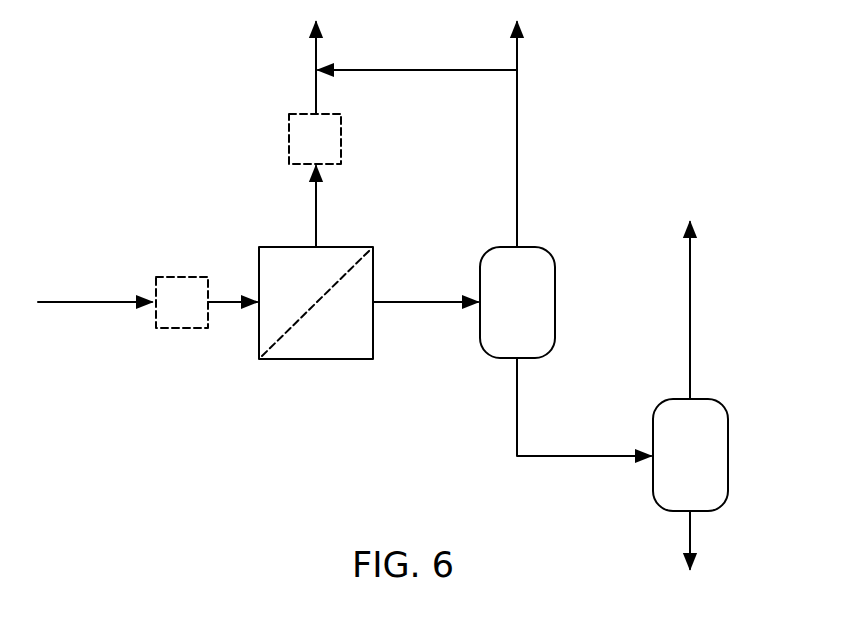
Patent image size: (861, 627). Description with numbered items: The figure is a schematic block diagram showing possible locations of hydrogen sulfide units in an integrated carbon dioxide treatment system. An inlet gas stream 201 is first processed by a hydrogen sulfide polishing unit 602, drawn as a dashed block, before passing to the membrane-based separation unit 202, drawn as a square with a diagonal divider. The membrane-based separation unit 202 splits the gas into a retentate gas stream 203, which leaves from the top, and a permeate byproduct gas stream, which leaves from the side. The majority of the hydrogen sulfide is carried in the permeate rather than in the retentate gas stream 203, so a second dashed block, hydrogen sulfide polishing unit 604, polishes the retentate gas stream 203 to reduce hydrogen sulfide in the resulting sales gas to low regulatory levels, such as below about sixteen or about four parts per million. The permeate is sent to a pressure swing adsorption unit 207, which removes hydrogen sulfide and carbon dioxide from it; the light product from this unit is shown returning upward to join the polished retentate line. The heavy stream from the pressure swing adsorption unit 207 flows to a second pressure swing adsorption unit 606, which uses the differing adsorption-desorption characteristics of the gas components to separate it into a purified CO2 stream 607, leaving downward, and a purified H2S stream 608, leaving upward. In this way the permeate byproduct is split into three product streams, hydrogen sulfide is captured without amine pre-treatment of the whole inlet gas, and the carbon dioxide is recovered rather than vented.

The inlet gas stream 201 is at (100, 302).
The hydrogen sulfide polishing unit 602 is at (176, 328).
The membrane-based separation unit 202 is at (346, 247).
The retentate gas stream 203 is at (316, 207).
The hydrogen sulfide polishing unit 604 is at (341, 128).
The pressure swing adsorption unit 207 is at (530, 247).
The second pressure swing adsorption unit 606 is at (707, 399).
The purified H2S stream 608 is at (690, 265).
The purified CO2 stream 607 is at (690, 535).